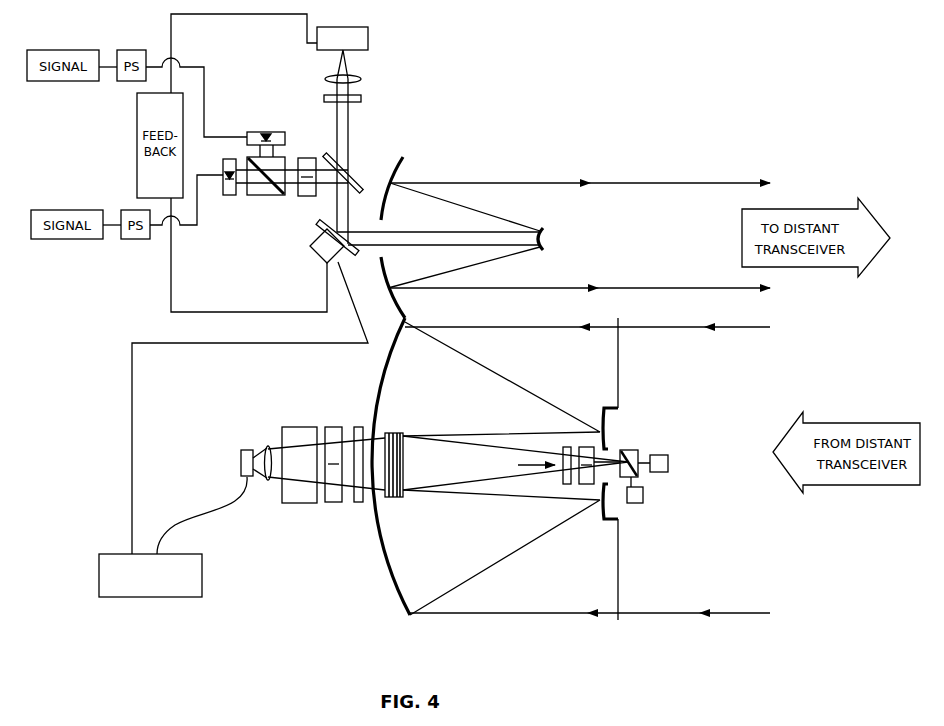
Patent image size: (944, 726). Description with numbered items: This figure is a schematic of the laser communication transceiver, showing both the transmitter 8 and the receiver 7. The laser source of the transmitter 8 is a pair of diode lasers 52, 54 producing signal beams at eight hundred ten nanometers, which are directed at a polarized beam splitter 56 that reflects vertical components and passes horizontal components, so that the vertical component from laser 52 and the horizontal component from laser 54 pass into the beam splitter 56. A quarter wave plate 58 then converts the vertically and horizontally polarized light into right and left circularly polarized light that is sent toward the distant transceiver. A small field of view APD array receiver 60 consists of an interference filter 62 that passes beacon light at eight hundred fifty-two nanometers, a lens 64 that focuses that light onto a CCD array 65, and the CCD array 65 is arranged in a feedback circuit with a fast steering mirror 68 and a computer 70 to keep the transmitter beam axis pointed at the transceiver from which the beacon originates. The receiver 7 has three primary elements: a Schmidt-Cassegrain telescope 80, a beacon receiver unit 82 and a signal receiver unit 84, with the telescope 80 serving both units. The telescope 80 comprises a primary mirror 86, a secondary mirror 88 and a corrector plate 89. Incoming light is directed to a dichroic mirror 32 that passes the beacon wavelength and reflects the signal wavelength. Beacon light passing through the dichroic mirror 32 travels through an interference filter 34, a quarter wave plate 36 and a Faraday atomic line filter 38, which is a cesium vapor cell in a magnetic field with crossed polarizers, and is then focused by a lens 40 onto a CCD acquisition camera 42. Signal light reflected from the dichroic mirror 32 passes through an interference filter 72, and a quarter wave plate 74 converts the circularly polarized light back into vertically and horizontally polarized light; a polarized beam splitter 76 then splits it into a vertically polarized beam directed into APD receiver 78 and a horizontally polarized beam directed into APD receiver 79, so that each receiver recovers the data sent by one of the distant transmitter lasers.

The receiver 7 is at (596, 177).
The transmitter 8 is at (696, 584).
The dichroic mirror 32 is at (395, 432).
The interference filter 34 is at (360, 427).
The quarter wave plate 36 is at (335, 427).
The Faraday atomic line filter 38 is at (305, 427).
The lens 40 is at (268, 446).
The CCD acquisition camera 42 is at (245, 450).
The transmitter laser 52 is at (266, 131).
The transmitter laser 54 is at (230, 196).
The polarized beam splitter 56 is at (297, 161).
The quarter wave plate 58 is at (298, 197).
The APD array receiver 60 is at (408, 74).
The interference filter 62 is at (363, 99).
The lens 64 is at (363, 79).
The CCD array 65 is at (368, 42).
The fast steering mirror 68 is at (318, 222).
The computer 70 is at (153, 598).
The interference filter 72 is at (567, 446).
The quarter wave plate 74 is at (588, 446).
The polarized beam splitter 76 is at (619, 449).
The APD receiver 78 is at (668, 463).
The APD receiver 79 is at (640, 504).
The Schmidt-Cassegrain telescope 80 is at (626, 506).
The beacon receiver unit 82 is at (292, 483).
The signal receiver unit 84 is at (626, 462).
The primary mirror 86 is at (392, 590).
The secondary mirror 88 is at (616, 519).
The corrector plate 89 is at (623, 600).